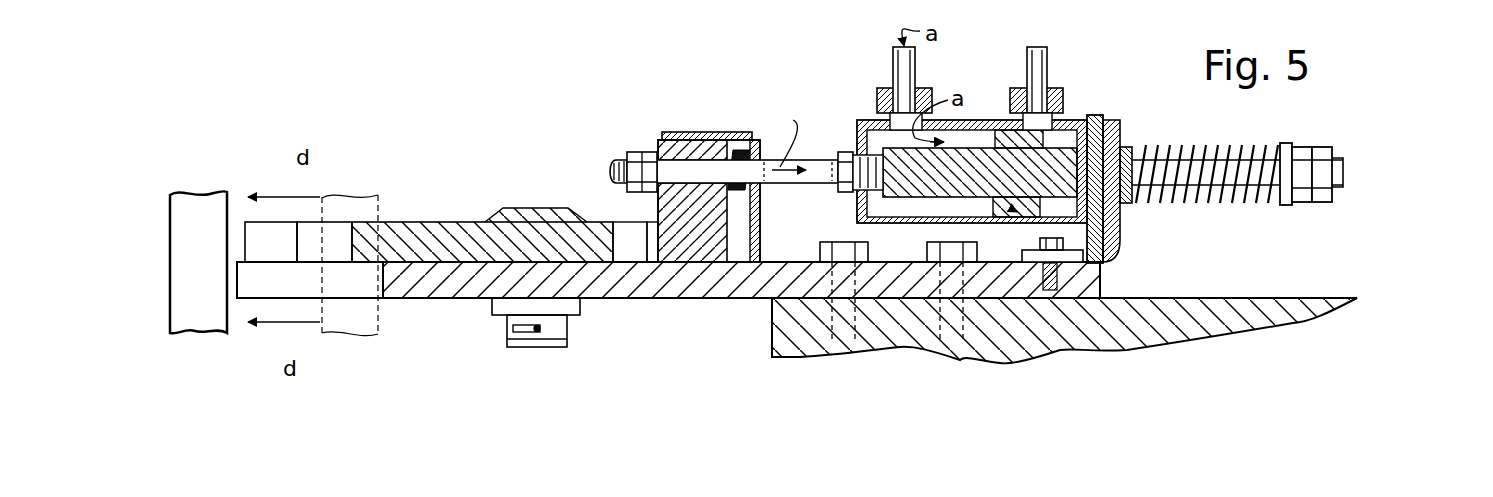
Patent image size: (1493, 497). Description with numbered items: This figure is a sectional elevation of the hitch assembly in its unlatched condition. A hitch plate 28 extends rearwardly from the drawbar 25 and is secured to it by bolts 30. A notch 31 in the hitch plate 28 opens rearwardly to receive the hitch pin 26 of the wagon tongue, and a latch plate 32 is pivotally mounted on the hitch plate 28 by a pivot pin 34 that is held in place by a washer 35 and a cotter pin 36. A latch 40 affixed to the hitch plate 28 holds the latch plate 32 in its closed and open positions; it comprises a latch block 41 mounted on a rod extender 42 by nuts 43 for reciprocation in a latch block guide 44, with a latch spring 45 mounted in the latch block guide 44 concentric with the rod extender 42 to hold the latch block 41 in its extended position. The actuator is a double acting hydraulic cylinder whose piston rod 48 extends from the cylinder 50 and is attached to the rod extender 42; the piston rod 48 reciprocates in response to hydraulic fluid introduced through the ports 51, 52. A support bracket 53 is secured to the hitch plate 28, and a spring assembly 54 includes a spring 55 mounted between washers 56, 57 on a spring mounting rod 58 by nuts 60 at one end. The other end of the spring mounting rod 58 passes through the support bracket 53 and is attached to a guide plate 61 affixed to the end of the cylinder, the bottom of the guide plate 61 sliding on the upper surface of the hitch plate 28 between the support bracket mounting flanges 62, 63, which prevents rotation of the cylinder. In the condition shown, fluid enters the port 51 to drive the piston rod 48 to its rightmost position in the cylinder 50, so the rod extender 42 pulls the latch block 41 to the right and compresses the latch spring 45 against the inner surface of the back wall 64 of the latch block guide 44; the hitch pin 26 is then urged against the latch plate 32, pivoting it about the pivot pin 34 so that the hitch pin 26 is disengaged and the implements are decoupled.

The drawbar 25 is at (1190, 310).
The hitch pin 26 is at (198, 207).
The hitch plate 28 is at (633, 280).
The bolts 30 is at (843, 245).
The notch 31 is at (268, 275).
The latch plate 32 is at (422, 228).
The pivot pin 34 is at (558, 328).
The washer 35 is at (495, 307).
The cotter pin 36 is at (525, 332).
The latch 40 is at (695, 197).
The latch block 41 is at (623, 151).
The rod extender 42 is at (817, 167).
The nuts 43 is at (610, 157).
The latch block guide 44 is at (680, 132).
The latch spring 45 is at (737, 153).
The piston rod 48 is at (860, 0).
The cylinder 50 is at (992, 227).
The port 51 is at (925, 78).
The port 52 is at (1055, 76).
The support bracket 53 is at (1110, 125).
The spring assembly 54 is at (1256, 133).
The spring 55 is at (1203, 202).
The washer 56 is at (1287, 203).
The washer 57 is at (1122, 147).
The spring mounting rod 58 is at (1190, 167).
The nuts 60 is at (1316, 138).
The guide plate 61 is at (1100, 115).
The support bracket mounting flange 62 is at (1073, 257).
The support bracket mounting flange 63 is at (1060, 0).
The back wall 64 is at (747, 220).